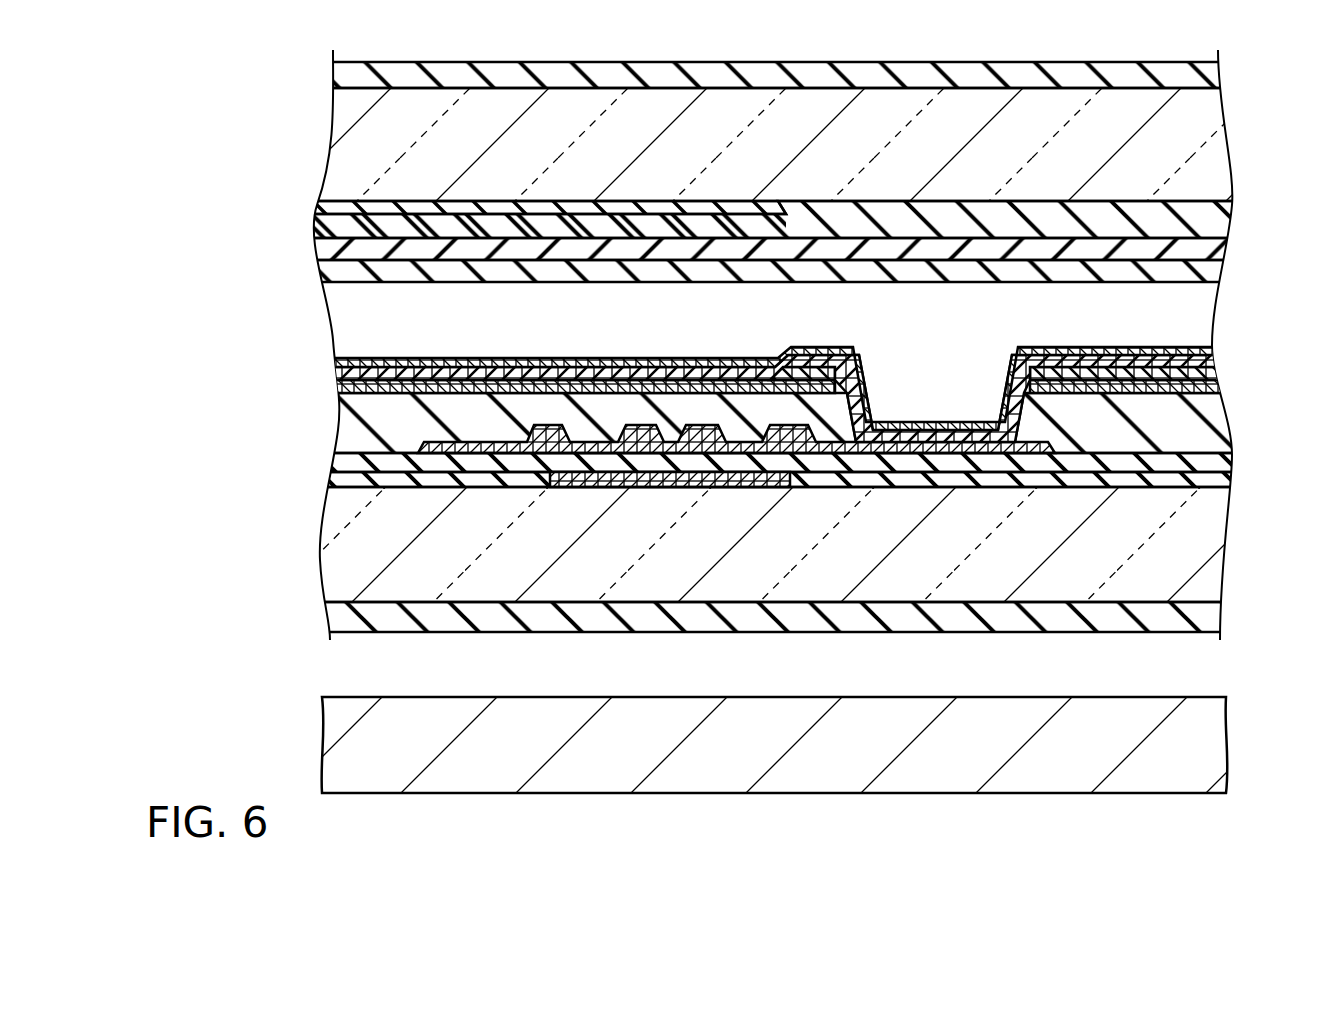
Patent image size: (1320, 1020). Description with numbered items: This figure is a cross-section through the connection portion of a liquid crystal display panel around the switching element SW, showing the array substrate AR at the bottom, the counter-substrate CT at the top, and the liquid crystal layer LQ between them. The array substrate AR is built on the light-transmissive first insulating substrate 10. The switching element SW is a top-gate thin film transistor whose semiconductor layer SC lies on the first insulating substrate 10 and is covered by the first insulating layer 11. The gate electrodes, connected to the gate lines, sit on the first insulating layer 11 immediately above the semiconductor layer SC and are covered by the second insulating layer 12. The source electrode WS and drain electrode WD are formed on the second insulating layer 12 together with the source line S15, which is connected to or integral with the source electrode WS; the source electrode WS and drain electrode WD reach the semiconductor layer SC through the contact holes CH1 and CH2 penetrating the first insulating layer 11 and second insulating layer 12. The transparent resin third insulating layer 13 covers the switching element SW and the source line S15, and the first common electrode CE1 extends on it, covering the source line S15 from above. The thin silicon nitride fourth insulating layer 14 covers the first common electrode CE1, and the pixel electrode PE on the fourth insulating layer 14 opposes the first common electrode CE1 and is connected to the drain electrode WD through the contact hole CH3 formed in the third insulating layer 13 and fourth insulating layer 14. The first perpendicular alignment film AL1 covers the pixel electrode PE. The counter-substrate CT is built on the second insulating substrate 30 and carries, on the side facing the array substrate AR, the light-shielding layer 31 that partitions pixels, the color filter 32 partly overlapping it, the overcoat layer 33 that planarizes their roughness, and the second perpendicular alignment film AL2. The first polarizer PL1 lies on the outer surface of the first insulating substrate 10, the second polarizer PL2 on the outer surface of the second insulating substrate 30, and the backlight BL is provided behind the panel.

The second polarizer PL2 is at (1200, 78).
The second insulating substrate 30 is at (1205, 128).
The light-shielding layer 31 is at (378, 206).
The color filter 32 is at (1218, 222).
The overcoat layer 33 is at (1218, 248).
The second perpendicular alignment film AL2 is at (1215, 271).
The first perpendicular alignment film AL1 is at (1198, 350).
The pixel electrode PE is at (1215, 360).
The fourth insulating layer 14 is at (1210, 375).
The first common electrode CE1 is at (1215, 387).
The third insulating layer 13 is at (1218, 438).
The second insulating layer 12 is at (1218, 463).
The first insulating layer 11 is at (1215, 480).
The first insulating substrate 10 is at (1210, 552).
The first polarizer PL1 is at (1208, 616).
The backlight BL is at (1205, 745).
The counter-substrate CT is at (312, 117).
The liquid crystal layer LQ is at (358, 313).
The array substrate AR is at (314, 537).
The source line S15 is at (418, 445).
The source electrode WS is at (556, 427).
The drain electrode WD is at (752, 427).
The contact hole CH3 is at (932, 405).
The contact hole CH1 is at (553, 465).
The contact hole CH2 is at (795, 460).
The semiconductor layer SC is at (590, 482).
The switching element SW is at (845, 542).